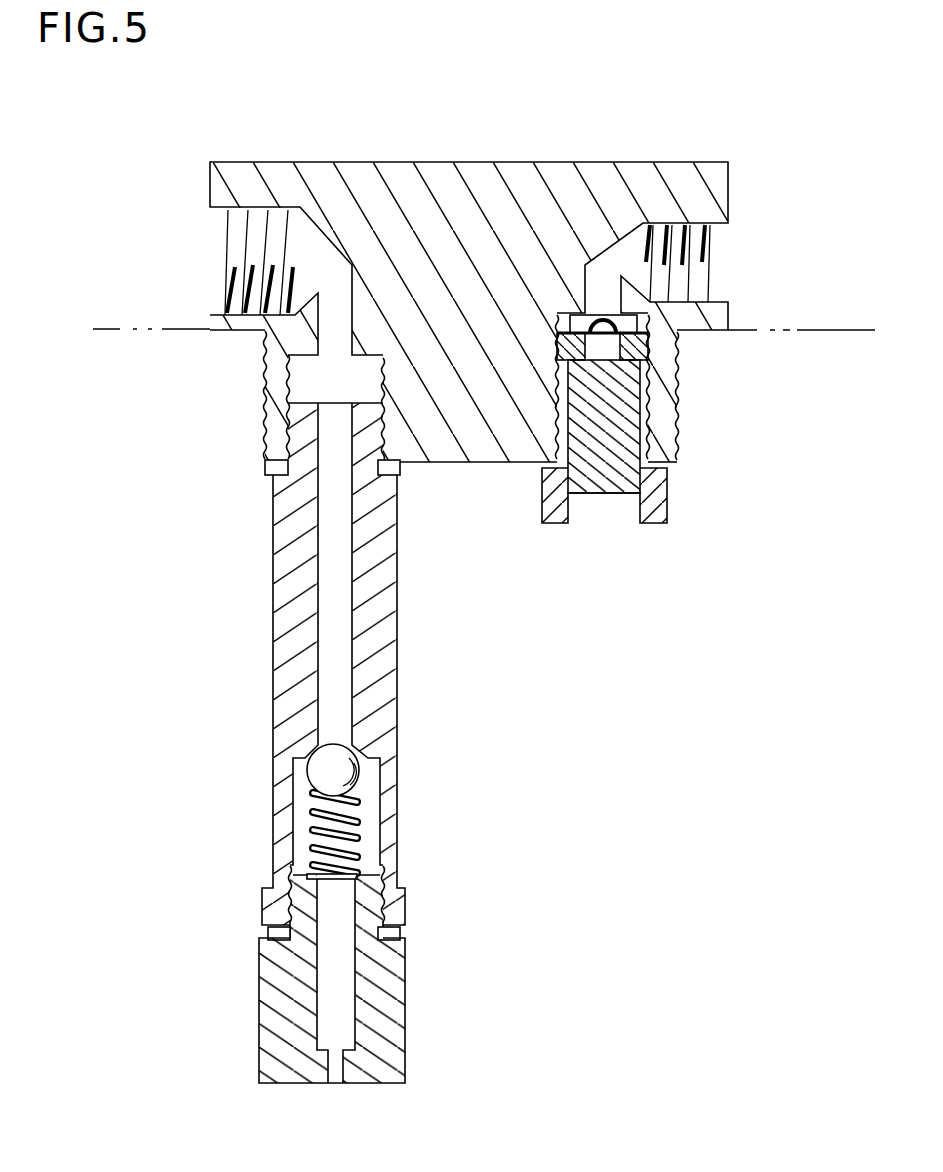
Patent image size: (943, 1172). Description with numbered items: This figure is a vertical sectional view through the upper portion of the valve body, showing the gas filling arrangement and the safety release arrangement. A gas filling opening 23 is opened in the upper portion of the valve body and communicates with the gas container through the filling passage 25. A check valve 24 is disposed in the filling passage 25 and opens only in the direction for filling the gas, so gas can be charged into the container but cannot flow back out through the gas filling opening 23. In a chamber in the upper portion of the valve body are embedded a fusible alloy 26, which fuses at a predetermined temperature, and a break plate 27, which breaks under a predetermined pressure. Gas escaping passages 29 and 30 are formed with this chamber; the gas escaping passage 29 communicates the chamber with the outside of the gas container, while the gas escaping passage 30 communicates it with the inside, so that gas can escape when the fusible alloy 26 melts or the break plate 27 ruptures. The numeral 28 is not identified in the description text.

The gas filling opening 23 is at (208, 250).
The gas escaping passage 29 is at (730, 262).
The break plate 27 is at (657, 328).
The gas escaping passage 30 is at (604, 516).
The fusible alloy 26 is at (597, 478).
The plug nut 28 is at (621, 498).
The check valve 24 is at (360, 775).
The filling passage 25 is at (328, 943).